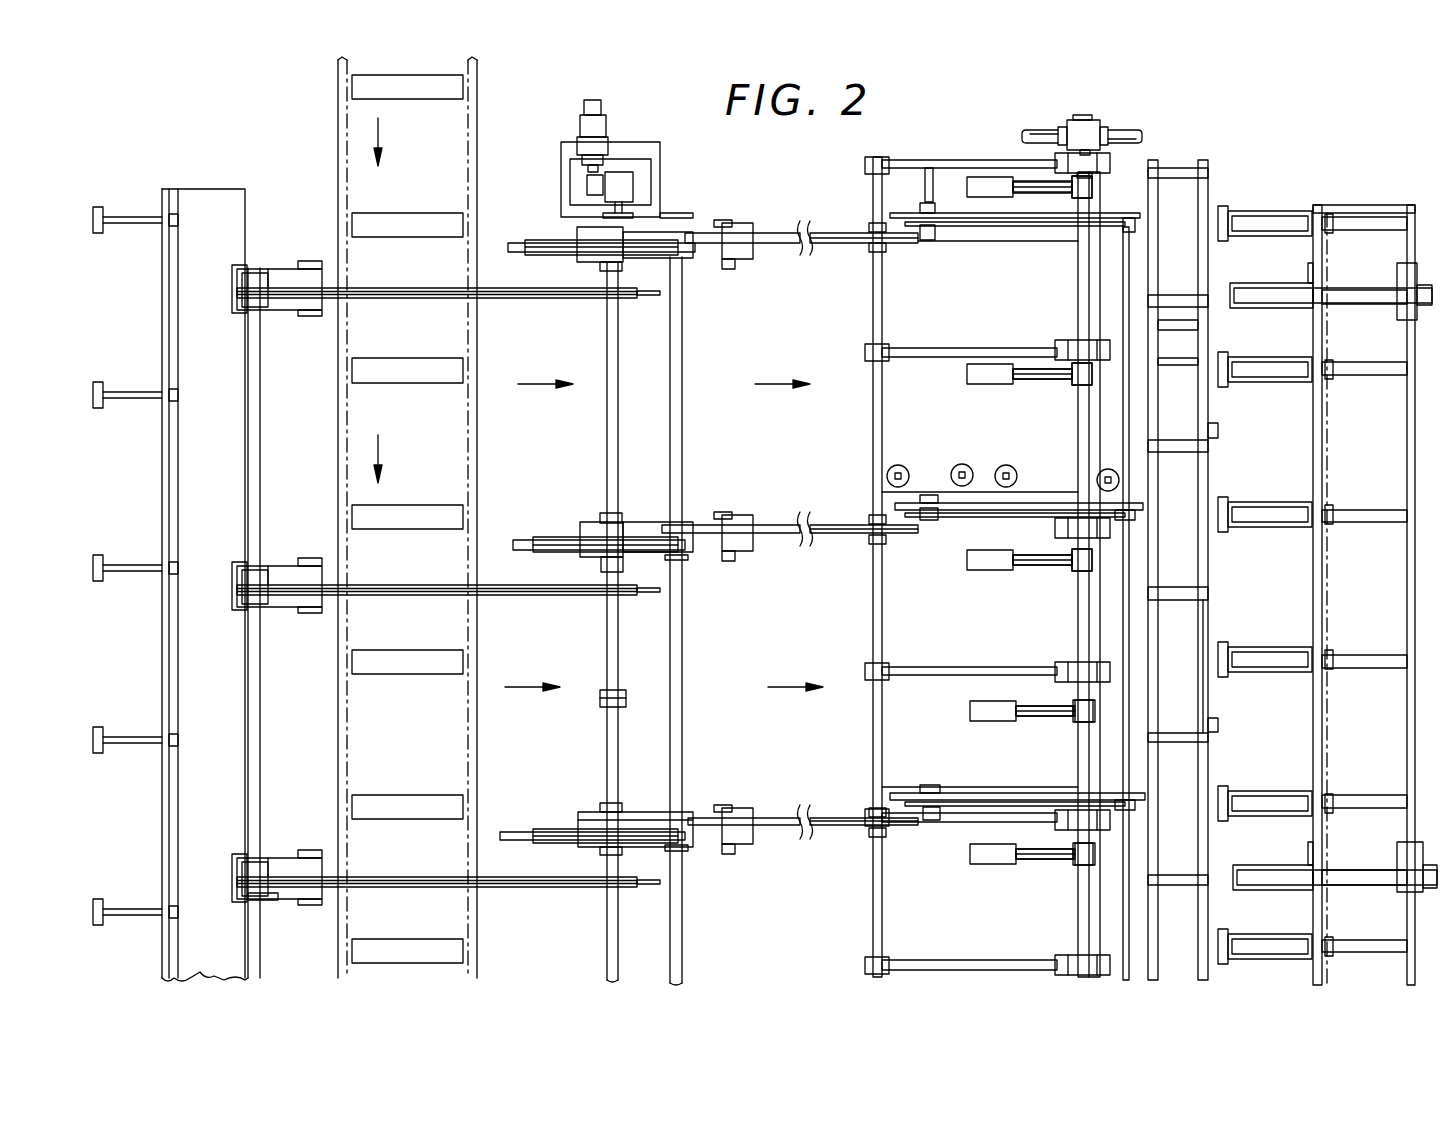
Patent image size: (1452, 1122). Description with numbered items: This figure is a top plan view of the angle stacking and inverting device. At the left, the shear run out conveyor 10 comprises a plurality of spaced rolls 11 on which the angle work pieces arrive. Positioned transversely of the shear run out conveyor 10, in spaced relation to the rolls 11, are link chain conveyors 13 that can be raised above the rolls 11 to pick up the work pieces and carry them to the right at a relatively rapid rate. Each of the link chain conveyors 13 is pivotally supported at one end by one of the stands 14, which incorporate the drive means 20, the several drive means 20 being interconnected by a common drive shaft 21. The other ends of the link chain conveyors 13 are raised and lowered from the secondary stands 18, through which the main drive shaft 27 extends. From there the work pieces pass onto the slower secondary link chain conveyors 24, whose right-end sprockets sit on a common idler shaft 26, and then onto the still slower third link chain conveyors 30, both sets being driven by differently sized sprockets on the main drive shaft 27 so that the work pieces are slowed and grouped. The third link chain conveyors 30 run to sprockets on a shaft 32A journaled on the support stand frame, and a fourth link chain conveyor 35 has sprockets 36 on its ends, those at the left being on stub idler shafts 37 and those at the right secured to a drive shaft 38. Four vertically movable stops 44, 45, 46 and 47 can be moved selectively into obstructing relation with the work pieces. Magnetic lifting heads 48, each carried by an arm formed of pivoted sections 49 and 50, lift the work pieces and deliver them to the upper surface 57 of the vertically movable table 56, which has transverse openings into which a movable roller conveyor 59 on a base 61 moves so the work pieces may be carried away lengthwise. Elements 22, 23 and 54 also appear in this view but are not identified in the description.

The shear run out conveyor 10 is at (468, 133).
The rolls 11 is at (403, 212).
The link chain conveyors 13 is at (512, 298).
The stands 14 is at (278, 278).
The secondary stands 18 is at (702, 840).
The drive means 20 is at (272, 900).
The common drive shaft 21 is at (258, 754).
The adjusting arm 22 is at (120, 208).
The wall 23 is at (205, 585).
The secondary link chain conveyors 24 is at (556, 538).
The idler shaft 26 is at (605, 760).
The main drive shaft 27 is at (684, 760).
The third link chain conveyors 30 is at (767, 521).
The shaft 32A is at (873, 737).
The fourth link chain conveyor 35 is at (1001, 219).
The sprockets 36 is at (928, 223).
The stub idler shafts 37 is at (925, 240).
The drive shaft 38 is at (1128, 415).
The vertically movable stop 44 is at (900, 464).
The vertically movable stop 45 is at (968, 466).
The vertically movable stop 46 is at (1012, 470).
The vertically movable stop 47 is at (1108, 469).
The magnetic lifting heads 48 is at (980, 182).
The arm section 49 is at (1020, 378).
The arm section 50 is at (1055, 383).
The post 54 is at (1078, 318).
The vertically movable table 56 is at (1200, 685).
The upper surface 57 is at (1200, 623).
The movable roller conveyor 59 is at (1281, 219).
The base 61 is at (1364, 595).